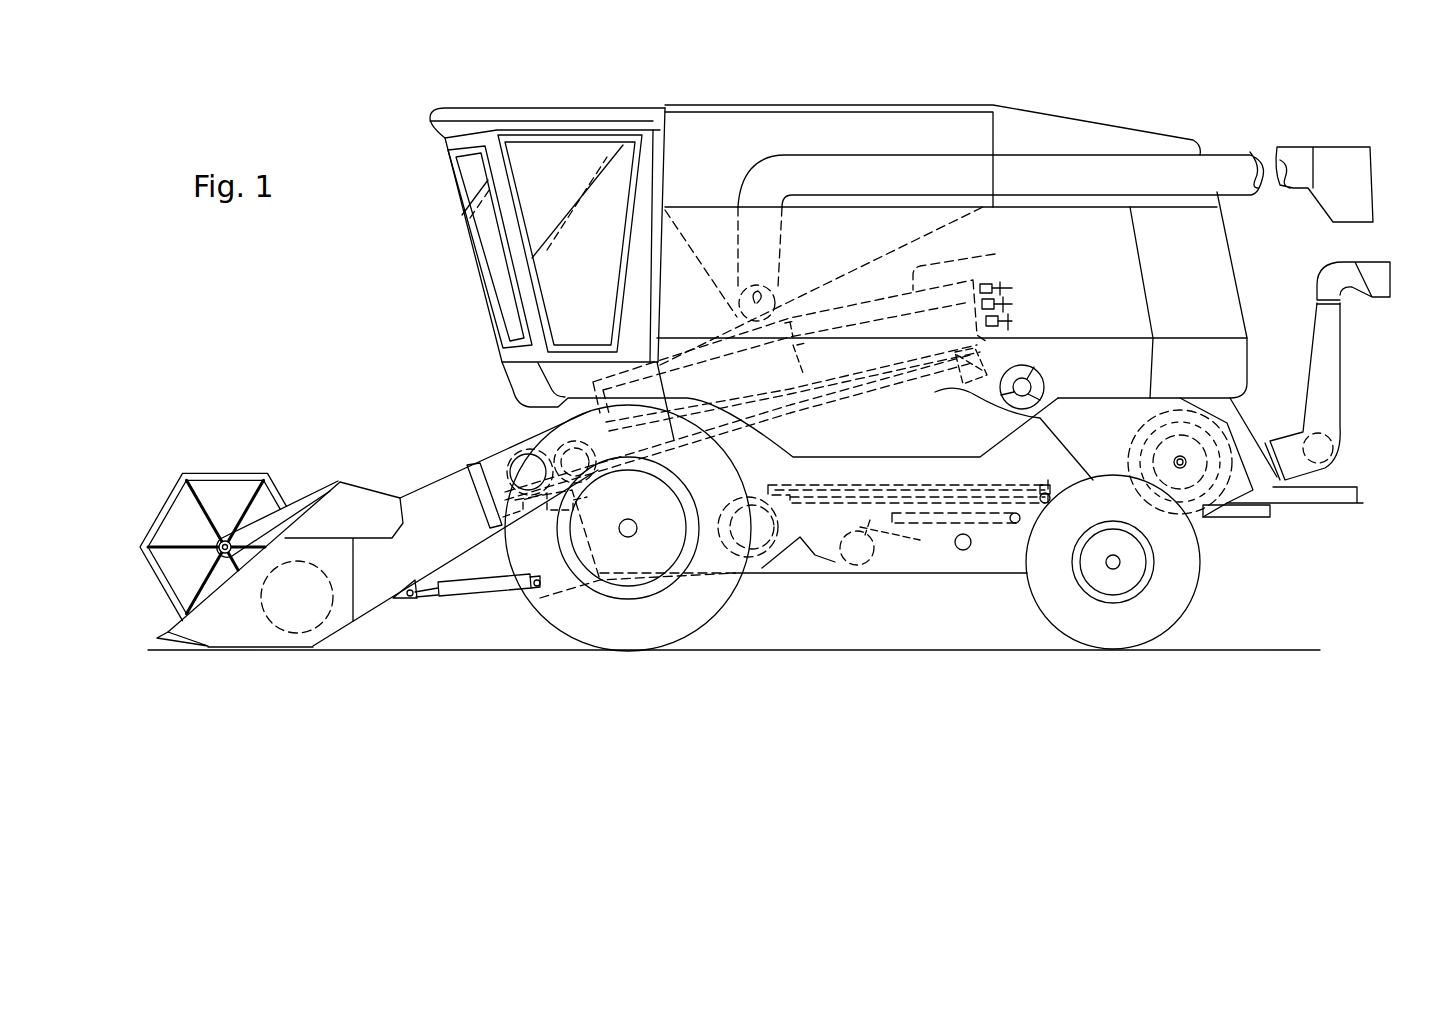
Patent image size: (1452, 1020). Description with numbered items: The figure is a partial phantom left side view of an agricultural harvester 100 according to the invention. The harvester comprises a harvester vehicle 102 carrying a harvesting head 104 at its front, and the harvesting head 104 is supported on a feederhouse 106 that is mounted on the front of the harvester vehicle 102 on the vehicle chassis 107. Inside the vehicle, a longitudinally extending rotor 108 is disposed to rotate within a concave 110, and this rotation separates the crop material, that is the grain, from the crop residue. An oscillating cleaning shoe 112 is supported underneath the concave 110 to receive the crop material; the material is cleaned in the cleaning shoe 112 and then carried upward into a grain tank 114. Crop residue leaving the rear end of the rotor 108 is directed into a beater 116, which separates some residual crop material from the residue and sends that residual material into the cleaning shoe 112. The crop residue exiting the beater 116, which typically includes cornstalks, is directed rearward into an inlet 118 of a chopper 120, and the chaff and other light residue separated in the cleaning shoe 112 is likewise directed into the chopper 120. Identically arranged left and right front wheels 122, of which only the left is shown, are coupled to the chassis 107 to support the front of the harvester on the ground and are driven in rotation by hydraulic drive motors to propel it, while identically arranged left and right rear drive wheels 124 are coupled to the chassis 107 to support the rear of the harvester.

The agricultural harvester 100 is at (363, 117).
The harvester vehicle 102 is at (704, 215).
The harvesting head 104 is at (258, 638).
The feederhouse 106 is at (428, 490).
The vehicle chassis 107 is at (902, 577).
The rotor 108 is at (995, 254).
The concave 110 is at (890, 415).
The cleaning shoe 112 is at (890, 478).
The grain tank 114 is at (787, 112).
The beater 116 is at (1037, 368).
The inlet 118 is at (1167, 400).
The chopper 120 is at (1218, 537).
The front wheels 122 is at (730, 598).
The rear drive wheels 124 is at (1035, 602).